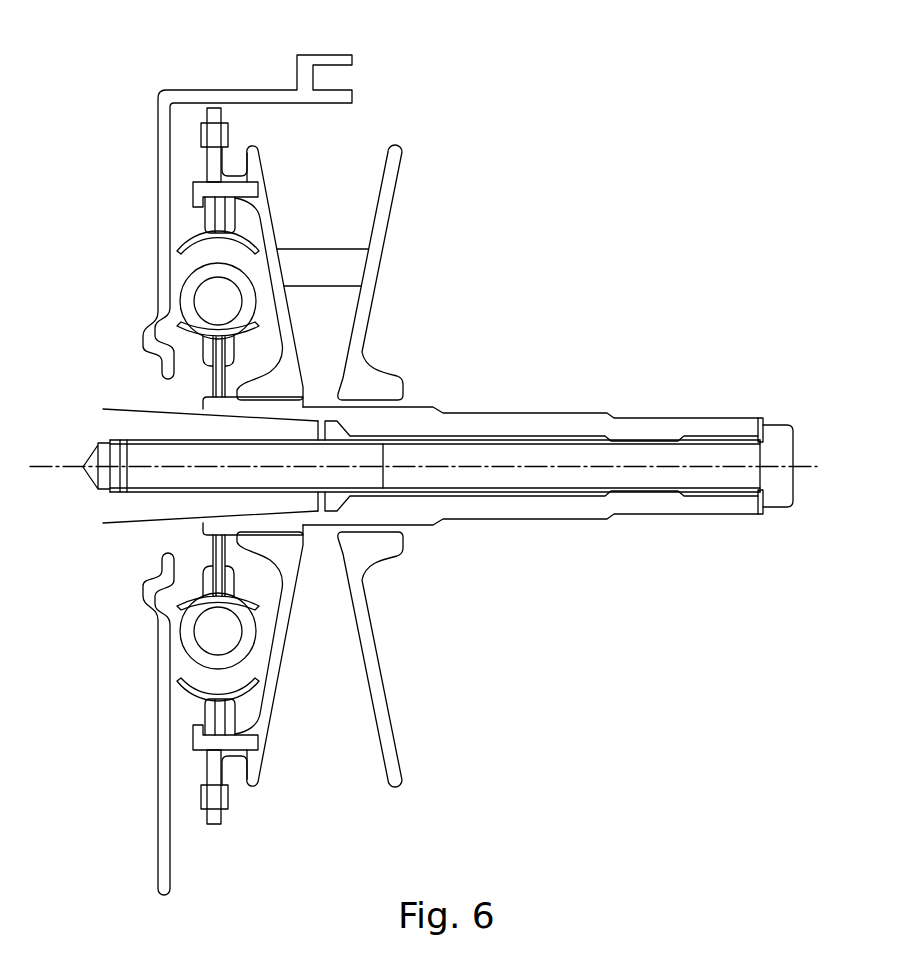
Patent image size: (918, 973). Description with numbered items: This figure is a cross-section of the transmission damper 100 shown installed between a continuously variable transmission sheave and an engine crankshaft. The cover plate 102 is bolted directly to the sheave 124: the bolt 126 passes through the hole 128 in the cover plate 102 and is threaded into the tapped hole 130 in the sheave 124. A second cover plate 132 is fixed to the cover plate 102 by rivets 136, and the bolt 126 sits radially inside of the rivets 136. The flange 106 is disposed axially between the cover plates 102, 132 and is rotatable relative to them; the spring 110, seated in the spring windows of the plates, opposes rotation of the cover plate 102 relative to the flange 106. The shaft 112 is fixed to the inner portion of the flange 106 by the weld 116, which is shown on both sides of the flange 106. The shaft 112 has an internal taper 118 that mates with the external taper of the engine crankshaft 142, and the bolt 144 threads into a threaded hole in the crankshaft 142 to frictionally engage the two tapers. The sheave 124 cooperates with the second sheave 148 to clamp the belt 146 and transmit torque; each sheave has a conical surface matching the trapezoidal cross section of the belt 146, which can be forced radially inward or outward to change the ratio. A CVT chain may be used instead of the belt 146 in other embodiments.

The transmission damper 100 is at (398, 111).
The cover plate 102 is at (245, 234).
The flange 106 is at (222, 373).
The spring 110 is at (200, 297).
The shaft 112 is at (492, 428).
The weld 116 is at (198, 401).
The internal taper 118 is at (280, 412).
The sheave 124 is at (256, 205).
The bolt 126 is at (203, 192).
The hole 128 is at (219, 173).
The tapped hole 130 is at (249, 172).
The cover plate 132 is at (213, 216).
The rivets 136 is at (213, 136).
The engine crankshaft 142 is at (145, 513).
The bolt 144 is at (775, 435).
The belt 146 is at (348, 275).
The sheave 148 is at (393, 167).